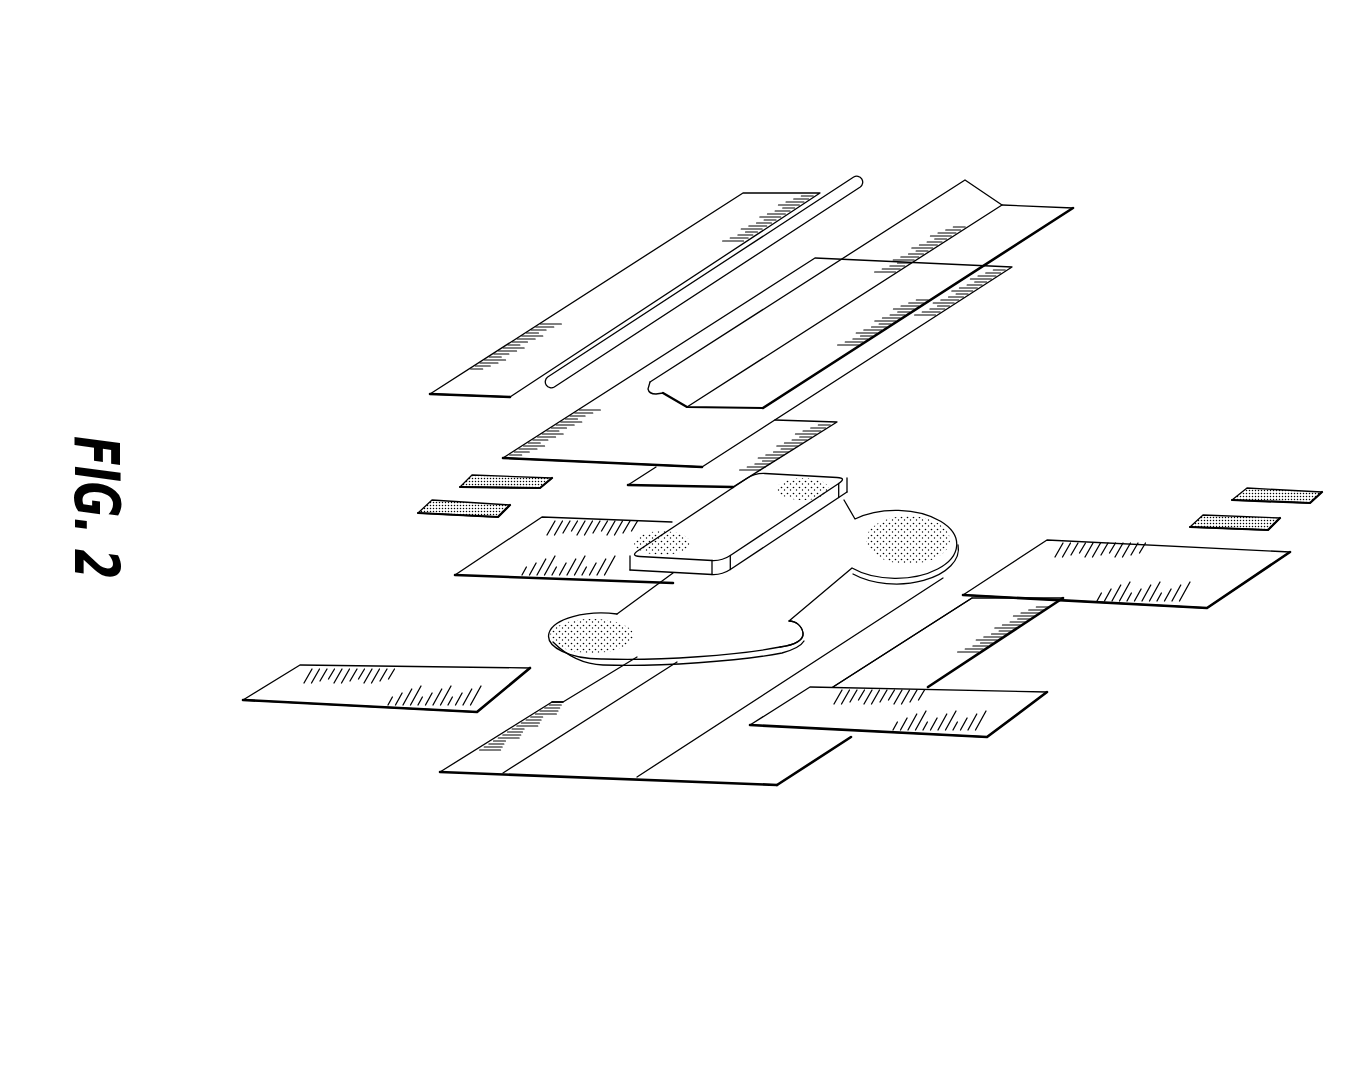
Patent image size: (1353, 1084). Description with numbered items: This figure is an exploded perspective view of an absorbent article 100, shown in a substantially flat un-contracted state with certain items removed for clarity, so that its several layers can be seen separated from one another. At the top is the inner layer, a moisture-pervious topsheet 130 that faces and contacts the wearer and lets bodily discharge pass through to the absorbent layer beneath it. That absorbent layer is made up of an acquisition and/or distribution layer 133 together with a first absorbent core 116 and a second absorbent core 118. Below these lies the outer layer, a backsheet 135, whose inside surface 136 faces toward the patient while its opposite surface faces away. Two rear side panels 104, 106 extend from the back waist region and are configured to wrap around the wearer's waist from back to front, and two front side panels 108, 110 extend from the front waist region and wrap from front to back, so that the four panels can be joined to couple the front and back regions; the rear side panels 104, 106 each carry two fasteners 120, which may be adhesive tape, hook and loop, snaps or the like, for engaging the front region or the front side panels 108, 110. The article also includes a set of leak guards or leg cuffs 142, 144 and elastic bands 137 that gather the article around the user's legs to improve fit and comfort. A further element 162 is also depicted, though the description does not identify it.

The absorbent article 100 is at (457, 207).
The rear side panel 104 is at (1236, 590).
The rear side panel 106 is at (455, 573).
The front side panel 108 is at (300, 664).
The front side panel 110 is at (1010, 722).
The first absorbent core 116 is at (915, 512).
The second absorbent core 118 is at (697, 568).
The fasteners 120 is at (468, 478).
The topsheet 130 is at (525, 457).
The acquisition and/or distribution layer 133 is at (826, 430).
The backsheet 135 is at (441, 774).
The inside surface 136 is at (634, 758).
The elastic bands 137 is at (560, 703).
The leg cuff 142 is at (613, 275).
The leg cuff 144 is at (1040, 234).
The tail portion 162 is at (805, 662).